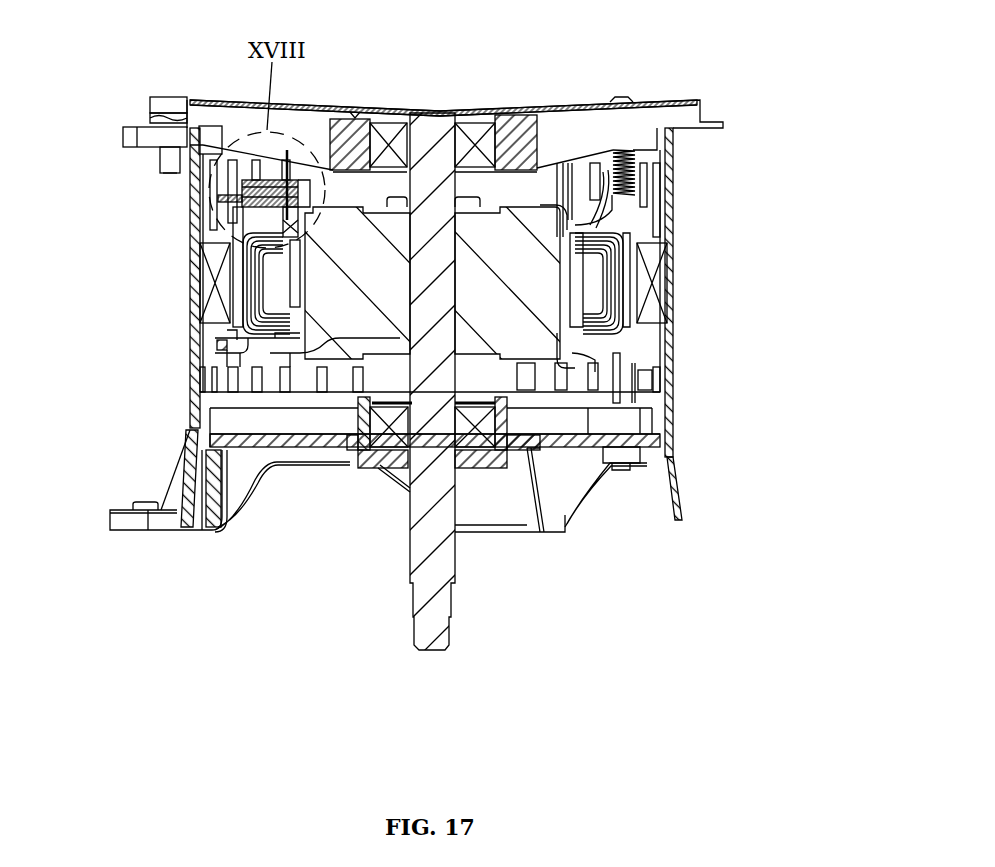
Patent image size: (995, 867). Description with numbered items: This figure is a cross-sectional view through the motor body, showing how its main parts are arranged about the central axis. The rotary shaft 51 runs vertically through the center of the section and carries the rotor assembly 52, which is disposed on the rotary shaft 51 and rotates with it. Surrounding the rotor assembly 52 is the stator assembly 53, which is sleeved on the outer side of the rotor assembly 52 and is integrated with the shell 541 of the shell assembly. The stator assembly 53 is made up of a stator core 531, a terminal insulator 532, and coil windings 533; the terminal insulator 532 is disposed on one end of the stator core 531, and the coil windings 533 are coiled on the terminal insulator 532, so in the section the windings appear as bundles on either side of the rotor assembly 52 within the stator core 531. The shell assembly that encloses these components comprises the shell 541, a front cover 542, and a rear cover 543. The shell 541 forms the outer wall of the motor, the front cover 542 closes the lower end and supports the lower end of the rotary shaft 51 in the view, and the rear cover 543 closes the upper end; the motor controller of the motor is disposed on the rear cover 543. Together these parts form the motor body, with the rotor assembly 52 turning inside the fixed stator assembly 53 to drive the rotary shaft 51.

The rotary shaft 51 is at (438, 548).
The rotor assembly 52 is at (497, 333).
The stator assembly 53 is at (640, 347).
The stator core 531 is at (652, 280).
The terminal insulator 532 is at (247, 365).
The coil windings 533 is at (260, 293).
The shell 541 is at (670, 197).
The front cover 542 is at (307, 440).
The rear cover 543 is at (577, 130).